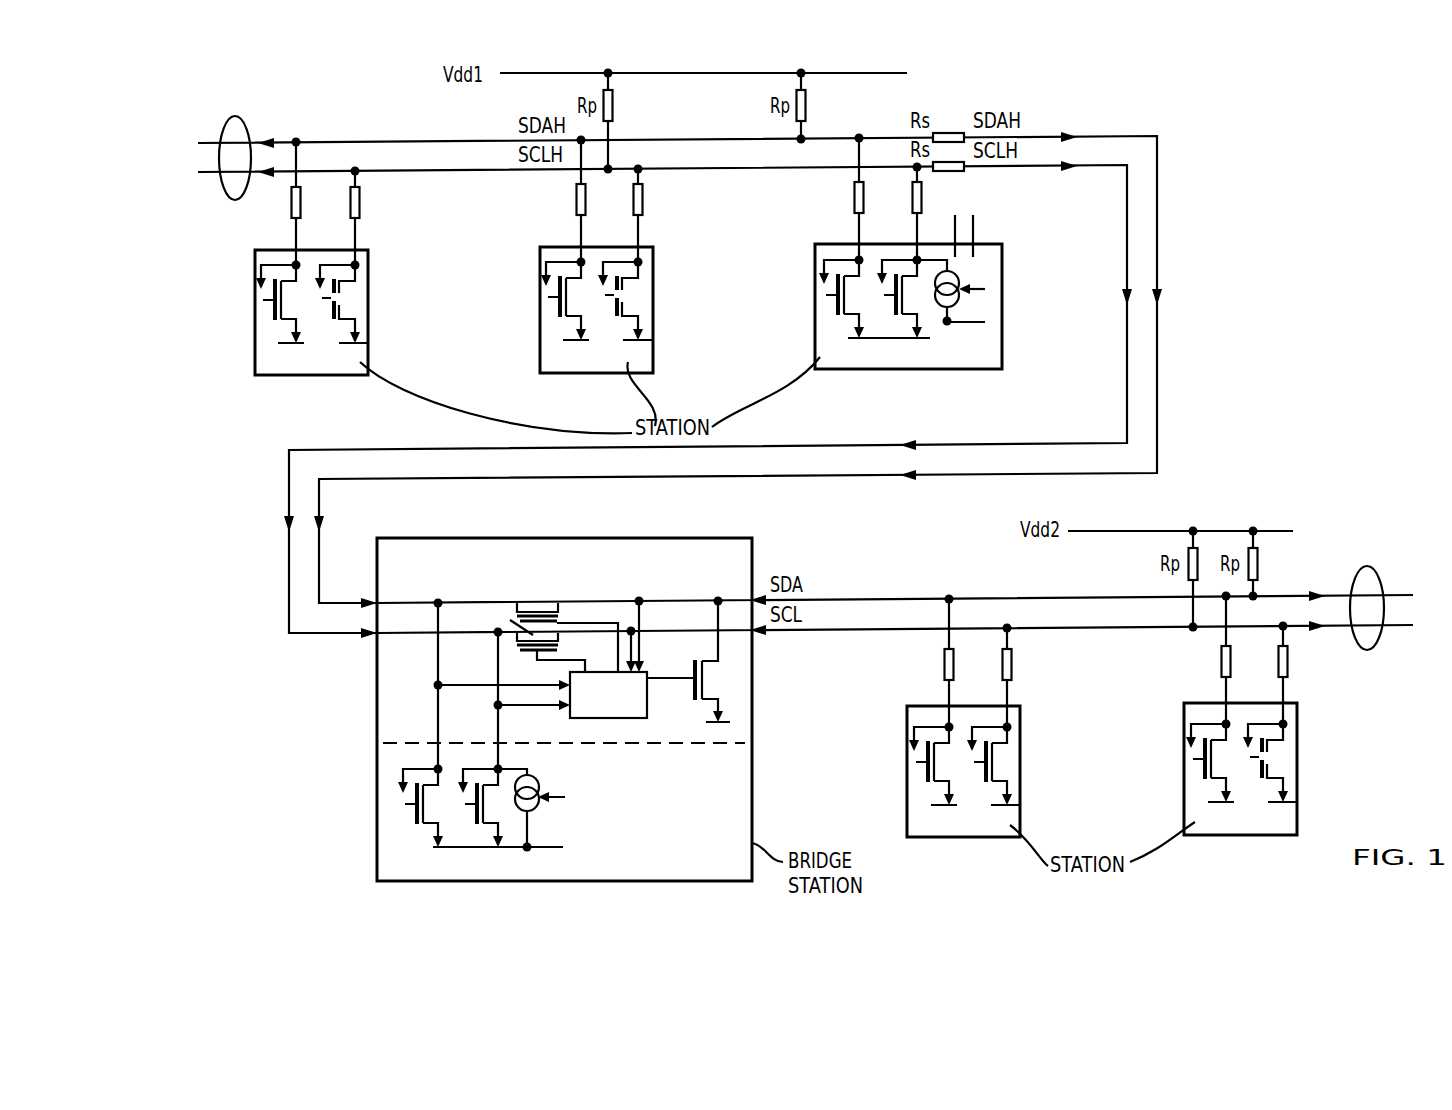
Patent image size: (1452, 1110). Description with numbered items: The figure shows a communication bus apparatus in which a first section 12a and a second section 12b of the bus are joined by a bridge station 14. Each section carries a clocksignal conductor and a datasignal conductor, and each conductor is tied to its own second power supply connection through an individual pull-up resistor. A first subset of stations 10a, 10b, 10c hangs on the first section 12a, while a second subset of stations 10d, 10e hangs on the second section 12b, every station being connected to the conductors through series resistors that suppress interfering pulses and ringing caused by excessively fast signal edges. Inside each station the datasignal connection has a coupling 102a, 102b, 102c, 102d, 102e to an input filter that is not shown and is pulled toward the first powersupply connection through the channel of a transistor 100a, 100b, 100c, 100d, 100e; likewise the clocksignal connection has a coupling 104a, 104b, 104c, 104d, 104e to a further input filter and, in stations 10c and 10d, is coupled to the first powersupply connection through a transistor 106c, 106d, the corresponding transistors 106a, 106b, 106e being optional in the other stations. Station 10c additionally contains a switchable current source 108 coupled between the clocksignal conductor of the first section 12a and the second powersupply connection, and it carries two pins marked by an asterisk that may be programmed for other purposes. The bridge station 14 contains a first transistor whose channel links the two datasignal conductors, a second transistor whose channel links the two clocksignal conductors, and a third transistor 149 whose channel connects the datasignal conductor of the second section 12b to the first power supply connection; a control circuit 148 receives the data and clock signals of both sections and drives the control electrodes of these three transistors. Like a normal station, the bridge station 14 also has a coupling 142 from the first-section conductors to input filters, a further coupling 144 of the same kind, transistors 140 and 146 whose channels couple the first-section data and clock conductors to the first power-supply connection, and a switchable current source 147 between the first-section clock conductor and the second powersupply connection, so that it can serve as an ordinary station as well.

The station 10a is at (309, 281).
The station 10b is at (592, 278).
The station 10c is at (898, 272).
The station 10d is at (960, 737).
The station 10e is at (1236, 741).
The first section of the communication bus 12a is at (231, 116).
The second section of the communication bus 12b is at (1366, 566).
The bridge station 14 is at (552, 709).
The transistor 100a is at (273, 316).
The transistor 100b is at (556, 313).
The transistor 100c is at (834, 311).
The transistor 100d is at (924, 778).
The transistor 100e is at (1201, 775).
The coupling 102a is at (262, 270).
The coupling 102b is at (545, 267).
The coupling 102c is at (823, 265).
The coupling 102d is at (913, 732).
The coupling 102e is at (1190, 729).
The coupling 104a is at (357, 274).
The coupling 104b is at (639, 271).
The coupling 104c is at (882, 270).
The coupling 104d is at (1007, 736).
The coupling 104e is at (1283, 733).
The transistor 106a is at (342, 309).
The transistor 106b is at (624, 306).
The transistor 106c is at (897, 318).
The transistor 106d is at (992, 771).
The transistor 106e is at (1268, 768).
The switchable current source 108 is at (952, 324).
The transistor 140 is at (405, 801).
The coupling 142 is at (423, 762).
The SCL connection line 144 is at (483, 762).
The transistor 146 is at (487, 810).
The switchable current source 147 is at (528, 778).
The control circuit 148 is at (630, 716).
The third transistor DPT 149 is at (712, 667).